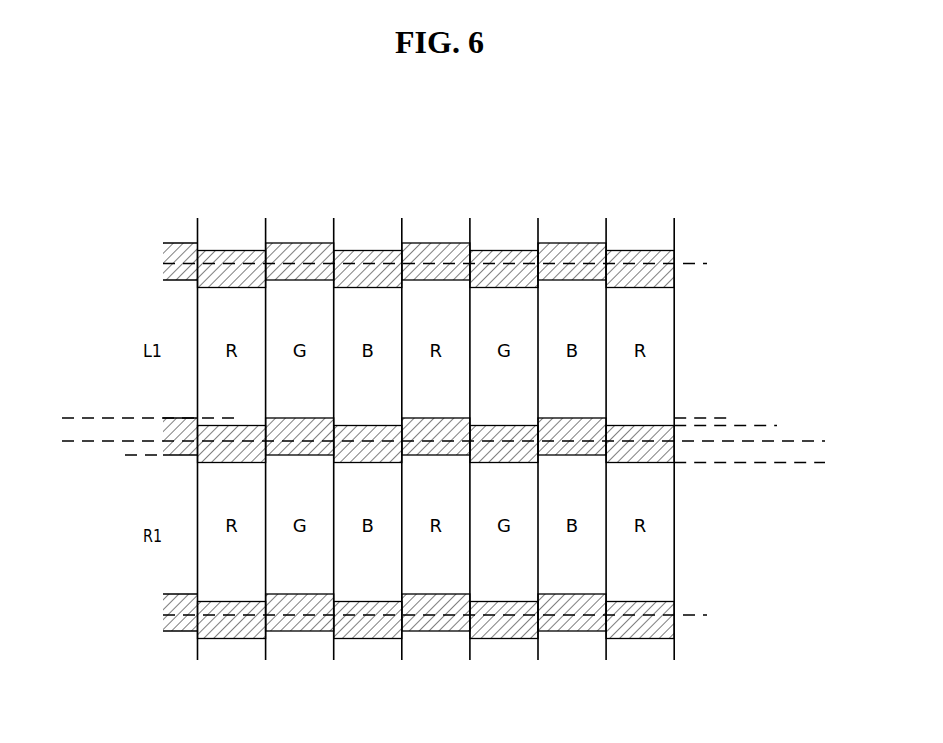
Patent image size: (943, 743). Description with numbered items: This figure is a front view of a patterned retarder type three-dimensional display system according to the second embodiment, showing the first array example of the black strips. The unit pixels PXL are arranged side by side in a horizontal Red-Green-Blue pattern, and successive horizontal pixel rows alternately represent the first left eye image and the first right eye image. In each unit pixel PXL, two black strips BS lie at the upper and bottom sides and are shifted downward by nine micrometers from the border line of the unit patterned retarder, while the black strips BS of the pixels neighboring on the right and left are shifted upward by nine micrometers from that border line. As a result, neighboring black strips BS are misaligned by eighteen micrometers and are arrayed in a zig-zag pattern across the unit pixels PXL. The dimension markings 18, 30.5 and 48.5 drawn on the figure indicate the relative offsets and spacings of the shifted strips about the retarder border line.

The black strip BS is at (571, 247).
The unit pixel PXL is at (668, 332).
The dimension 18 is at (727, 448).
The dimension 30.5 is at (764, 473).
The dimension 48.5 is at (812, 490).